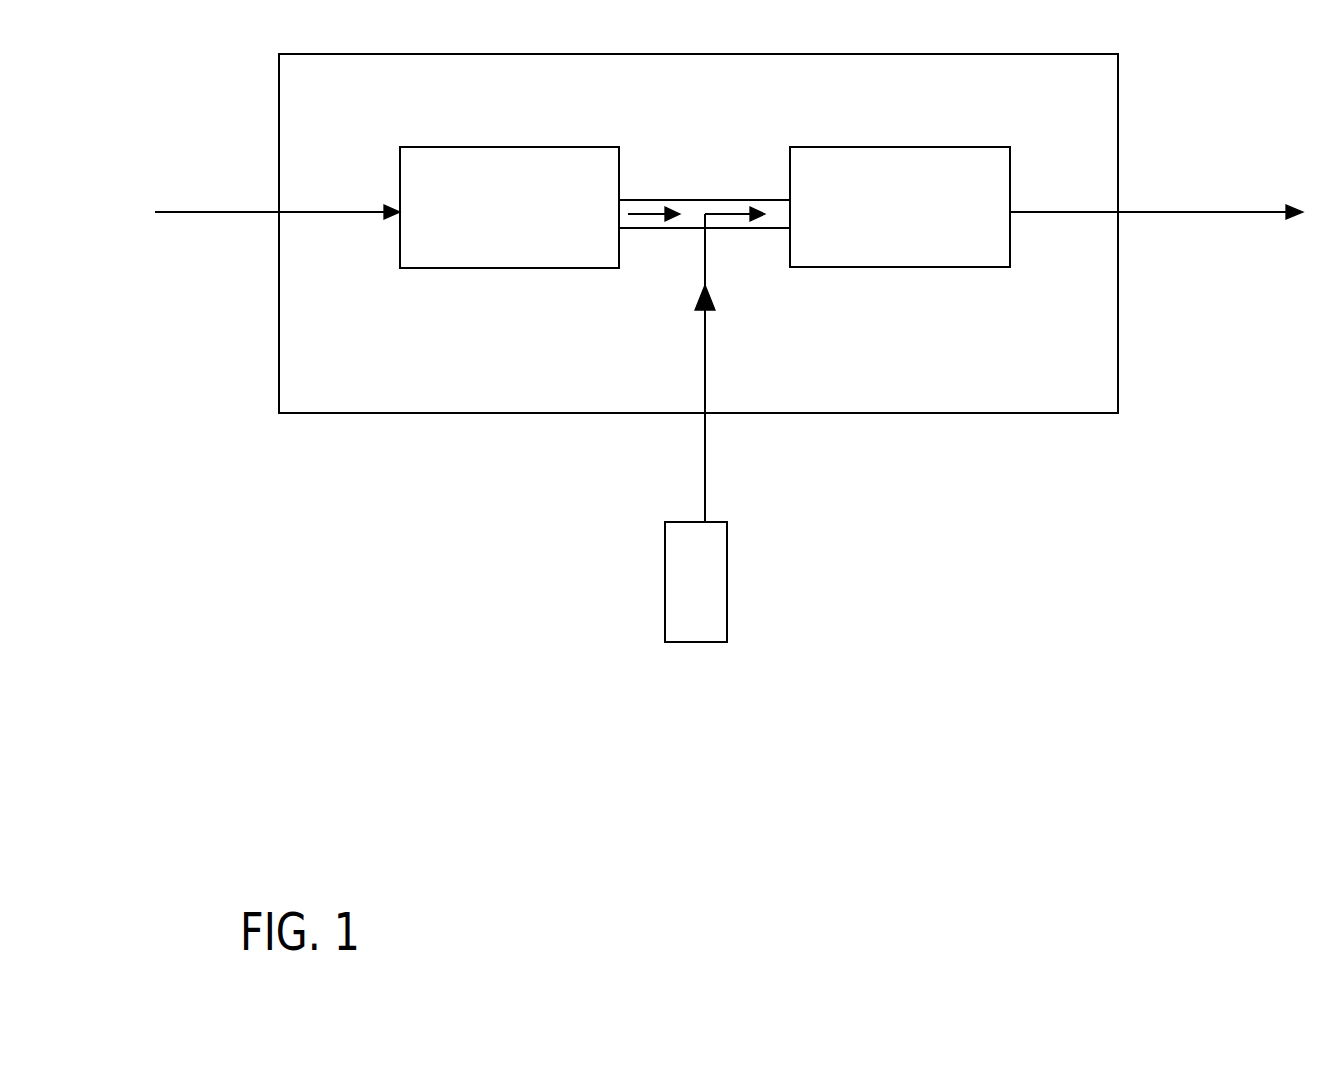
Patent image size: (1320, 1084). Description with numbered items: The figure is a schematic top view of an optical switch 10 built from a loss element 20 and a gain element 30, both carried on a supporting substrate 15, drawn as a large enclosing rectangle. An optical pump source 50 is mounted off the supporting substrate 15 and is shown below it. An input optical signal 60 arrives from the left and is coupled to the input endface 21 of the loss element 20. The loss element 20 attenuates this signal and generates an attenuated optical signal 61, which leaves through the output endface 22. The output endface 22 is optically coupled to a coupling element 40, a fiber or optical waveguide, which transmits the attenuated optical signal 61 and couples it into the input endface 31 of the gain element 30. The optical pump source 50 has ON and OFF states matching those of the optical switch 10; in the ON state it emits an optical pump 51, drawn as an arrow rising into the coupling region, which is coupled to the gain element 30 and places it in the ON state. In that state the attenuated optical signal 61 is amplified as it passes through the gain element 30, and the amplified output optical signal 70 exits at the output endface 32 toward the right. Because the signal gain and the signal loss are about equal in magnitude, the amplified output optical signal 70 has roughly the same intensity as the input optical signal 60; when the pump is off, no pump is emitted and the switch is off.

The optical switch 10 is at (799, 862).
The supporting substrate 15 is at (447, 400).
The loss element 20 is at (582, 173).
The input endface 21 is at (400, 226).
The output endface 22 is at (619, 213).
The gain element 30 is at (973, 173).
The input endface 31 is at (790, 213).
The output endface 32 is at (1010, 227).
The coupling element 40 is at (753, 200).
The optical pump source 50 is at (665, 575).
The optical pump 51 is at (705, 255).
The input optical signal 60 is at (217, 212).
The attenuated optical signal 61 is at (655, 210).
The amplified output optical signal 70 is at (1192, 212).